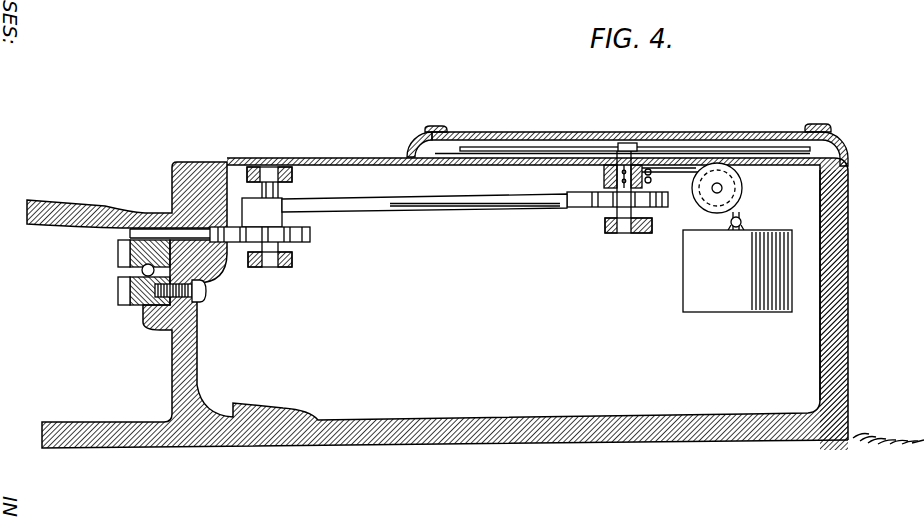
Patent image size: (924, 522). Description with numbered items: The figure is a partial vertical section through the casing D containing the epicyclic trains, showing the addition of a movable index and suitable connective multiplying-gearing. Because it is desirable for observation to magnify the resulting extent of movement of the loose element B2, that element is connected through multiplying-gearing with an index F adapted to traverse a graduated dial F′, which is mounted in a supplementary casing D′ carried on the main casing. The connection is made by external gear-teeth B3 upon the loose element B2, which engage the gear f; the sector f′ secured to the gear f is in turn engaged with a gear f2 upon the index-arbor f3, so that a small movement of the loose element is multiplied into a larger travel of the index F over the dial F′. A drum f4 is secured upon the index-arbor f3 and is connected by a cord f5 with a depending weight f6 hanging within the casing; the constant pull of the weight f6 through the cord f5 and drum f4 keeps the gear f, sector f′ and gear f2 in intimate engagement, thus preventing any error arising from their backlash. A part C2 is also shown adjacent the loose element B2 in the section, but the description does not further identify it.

The casing D is at (117, 417).
The supplementary casing D′ is at (537, 304).
The index F is at (486, 136).
The graduated dial F′ is at (760, 149).
The gear f is at (312, 237).
The sector f′ is at (524, 214).
The gear f2 is at (664, 209).
The index-arbor f3 is at (612, 197).
The drum f4 is at (605, 180).
The cord f5 is at (739, 203).
The depending weight f6 is at (737, 271).
The loose element B2 is at (118, 255).
The external gear-teeth B3 is at (235, 250).
The clamp block with screw C2 is at (118, 293).